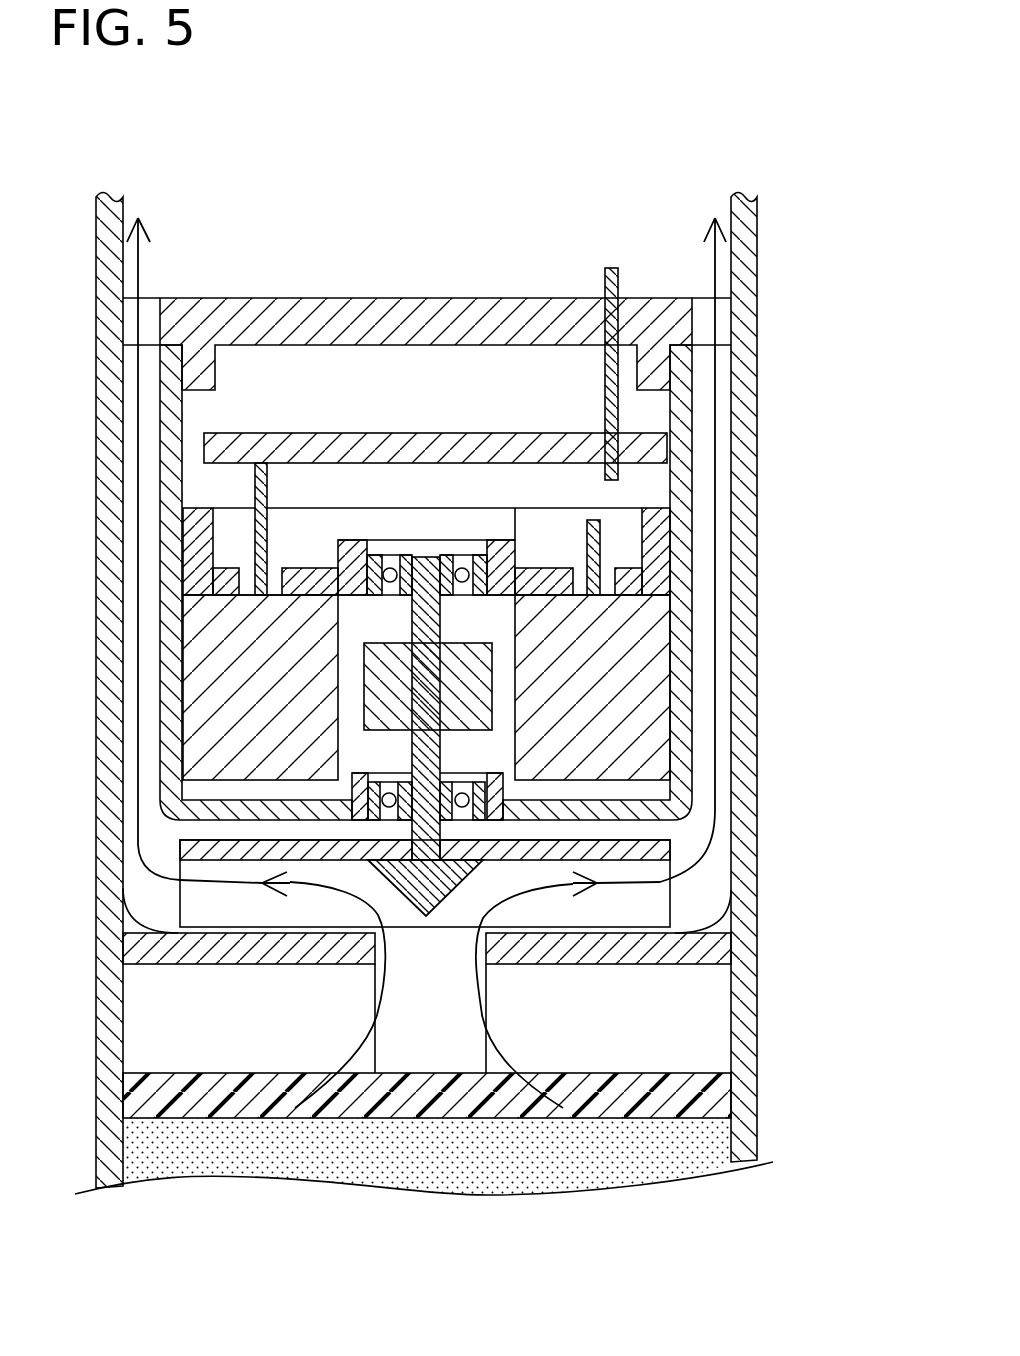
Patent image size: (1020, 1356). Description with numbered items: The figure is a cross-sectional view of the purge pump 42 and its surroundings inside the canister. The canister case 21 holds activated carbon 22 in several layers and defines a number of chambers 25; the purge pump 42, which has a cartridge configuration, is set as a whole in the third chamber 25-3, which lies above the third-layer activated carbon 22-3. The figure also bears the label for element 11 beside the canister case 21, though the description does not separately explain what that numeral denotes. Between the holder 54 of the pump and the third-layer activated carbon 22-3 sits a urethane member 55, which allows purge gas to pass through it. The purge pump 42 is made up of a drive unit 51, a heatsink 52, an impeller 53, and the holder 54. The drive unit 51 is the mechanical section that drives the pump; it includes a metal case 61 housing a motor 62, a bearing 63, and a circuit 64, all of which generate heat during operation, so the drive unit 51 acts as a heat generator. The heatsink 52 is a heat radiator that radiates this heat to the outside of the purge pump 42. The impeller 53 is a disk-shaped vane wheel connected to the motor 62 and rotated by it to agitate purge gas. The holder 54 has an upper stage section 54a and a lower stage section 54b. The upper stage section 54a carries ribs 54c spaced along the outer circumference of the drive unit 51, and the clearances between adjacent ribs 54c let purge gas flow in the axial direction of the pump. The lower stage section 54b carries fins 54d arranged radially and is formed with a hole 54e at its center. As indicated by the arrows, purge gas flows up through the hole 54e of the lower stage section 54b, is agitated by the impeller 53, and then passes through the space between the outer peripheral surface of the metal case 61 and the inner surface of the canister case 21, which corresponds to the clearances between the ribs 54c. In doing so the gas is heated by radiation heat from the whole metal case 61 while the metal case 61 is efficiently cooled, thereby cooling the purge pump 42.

The base 11 is at (488, 691).
The canister case 21 is at (748, 1058).
The activated carbon 22 is at (424, 1214).
The third-layer activated carbon 22-3 is at (563, 1163).
The chamber 25 is at (443, 216).
The third chamber 25-3 is at (497, 229).
The purge pump 42 is at (284, 253).
The drive unit 51 is at (521, 660).
The heatsink 52 is at (665, 320).
The impeller 53 is at (648, 900).
The holder 54 is at (508, 742).
The upper stage section 54a is at (727, 534).
The lower stage section 54b is at (712, 997).
The ribs 54c is at (723, 440).
The fins 54d is at (627, 1037).
The hole 54e is at (455, 947).
The urethane member 55 is at (715, 1090).
The metal case 61 is at (677, 620).
The motor 62 is at (633, 697).
The bearing 63 is at (462, 568).
The circuit 64 is at (327, 450).